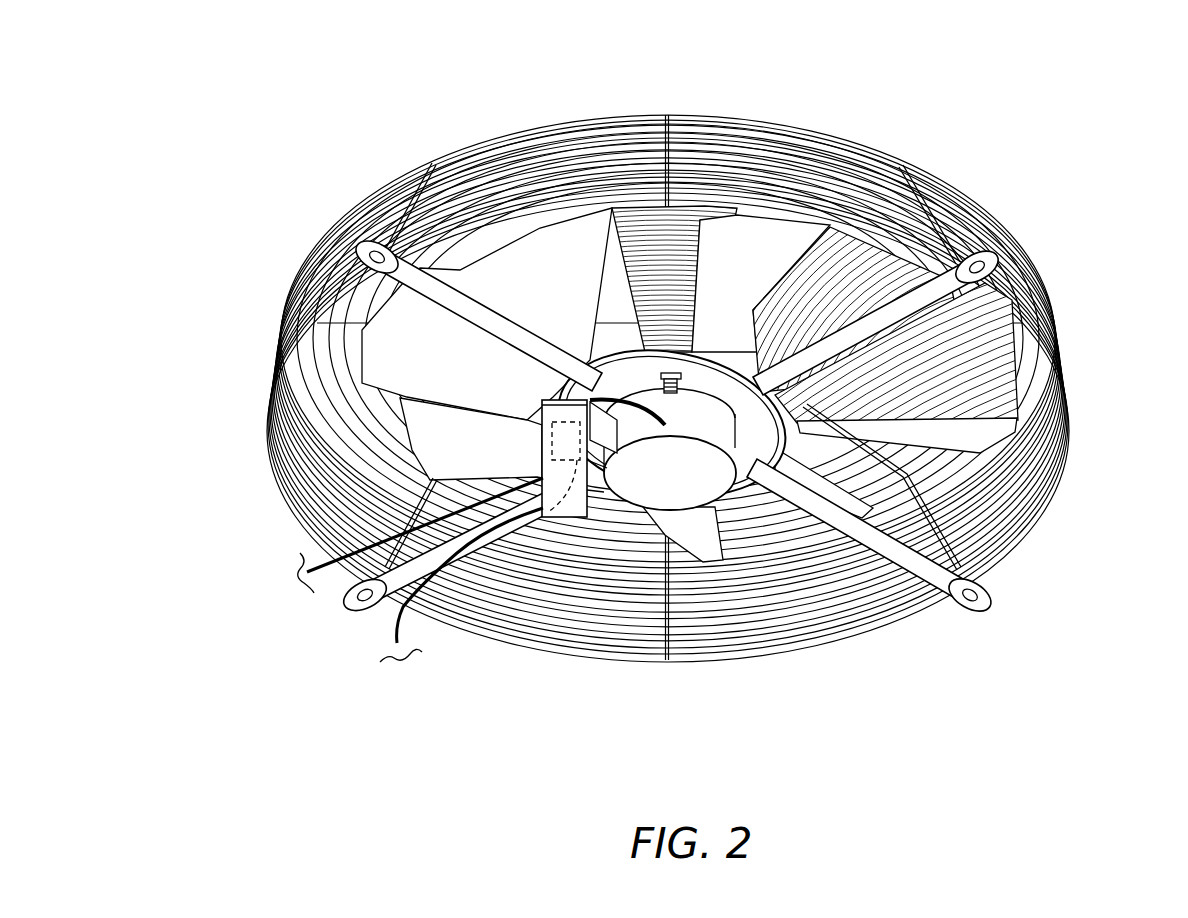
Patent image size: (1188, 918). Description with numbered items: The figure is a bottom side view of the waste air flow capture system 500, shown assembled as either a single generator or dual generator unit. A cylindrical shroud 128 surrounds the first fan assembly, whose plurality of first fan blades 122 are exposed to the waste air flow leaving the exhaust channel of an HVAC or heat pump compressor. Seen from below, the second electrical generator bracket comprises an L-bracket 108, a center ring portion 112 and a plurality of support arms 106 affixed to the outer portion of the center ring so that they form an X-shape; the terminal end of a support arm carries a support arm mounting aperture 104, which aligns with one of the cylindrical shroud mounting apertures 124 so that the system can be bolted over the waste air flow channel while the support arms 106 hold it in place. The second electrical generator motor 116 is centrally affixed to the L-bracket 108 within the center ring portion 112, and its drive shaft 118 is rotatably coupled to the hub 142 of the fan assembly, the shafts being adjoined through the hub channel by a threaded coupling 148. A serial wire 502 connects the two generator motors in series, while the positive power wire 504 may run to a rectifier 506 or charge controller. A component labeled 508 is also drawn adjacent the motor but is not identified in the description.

The waste air flow capture system 500 is at (674, 465).
The cylindrical shroud 128 is at (593, 152).
The first fan blades 122 is at (575, 237).
The center ring portion 112 is at (712, 365).
The threaded coupling 148 is at (640, 356).
The support arm mounting aperture 104 is at (372, 256).
The cylindrical shroud mounting apertures 124 is at (993, 274).
The support arms 106 is at (447, 302).
The L-bracket 108 is at (568, 508).
The hub 142 is at (806, 505).
The second electrical generator motor 116 is at (688, 497).
The second electrical generator motor drive shaft 118 is at (728, 390).
The motor wire 508 is at (672, 393).
The rectifier 506 is at (542, 447).
The positive power wire 504 is at (322, 572).
The serial wire 502 is at (406, 622).